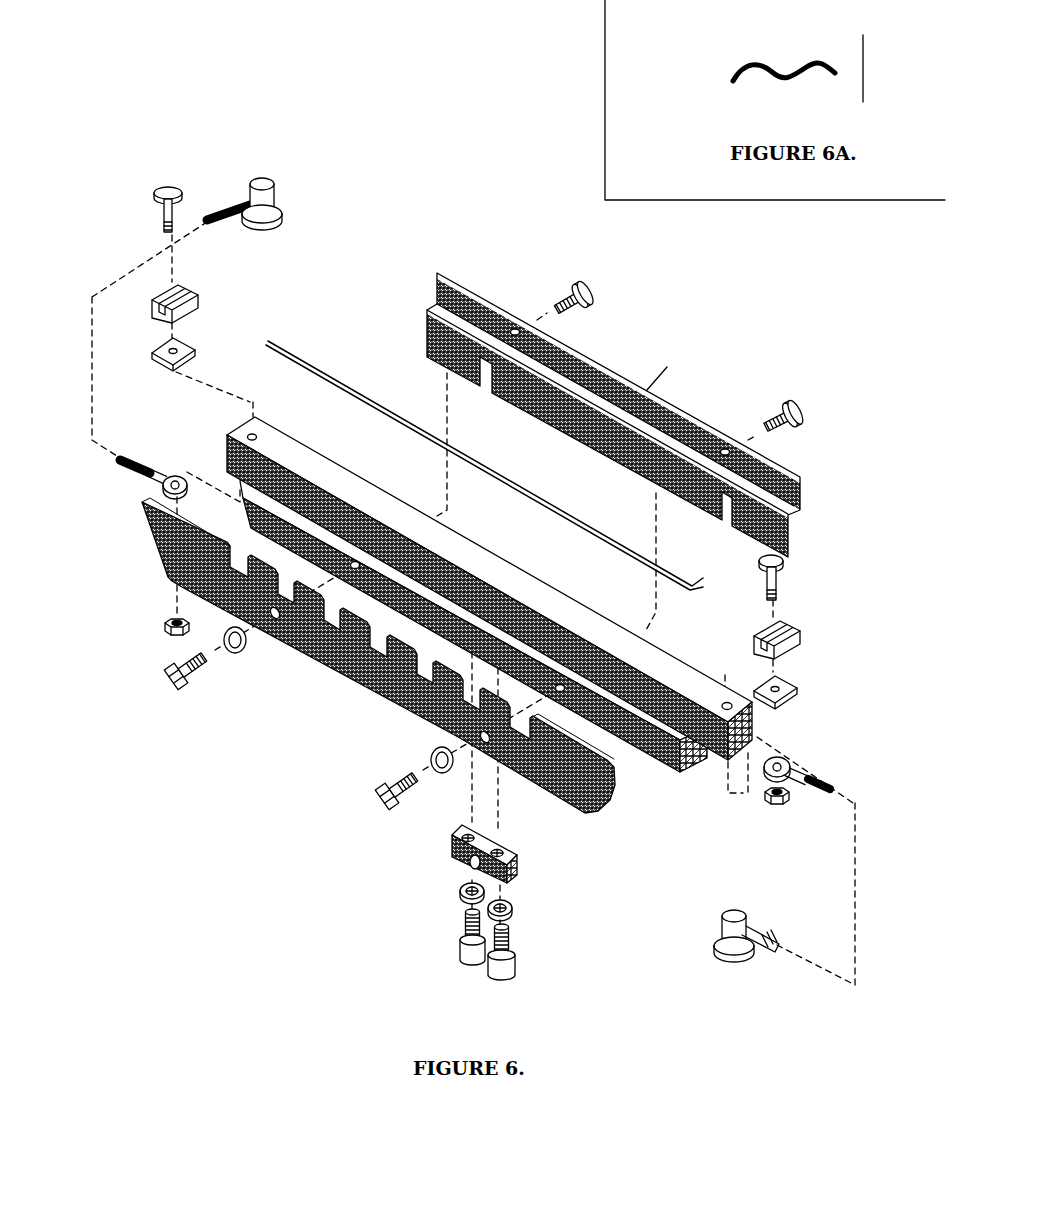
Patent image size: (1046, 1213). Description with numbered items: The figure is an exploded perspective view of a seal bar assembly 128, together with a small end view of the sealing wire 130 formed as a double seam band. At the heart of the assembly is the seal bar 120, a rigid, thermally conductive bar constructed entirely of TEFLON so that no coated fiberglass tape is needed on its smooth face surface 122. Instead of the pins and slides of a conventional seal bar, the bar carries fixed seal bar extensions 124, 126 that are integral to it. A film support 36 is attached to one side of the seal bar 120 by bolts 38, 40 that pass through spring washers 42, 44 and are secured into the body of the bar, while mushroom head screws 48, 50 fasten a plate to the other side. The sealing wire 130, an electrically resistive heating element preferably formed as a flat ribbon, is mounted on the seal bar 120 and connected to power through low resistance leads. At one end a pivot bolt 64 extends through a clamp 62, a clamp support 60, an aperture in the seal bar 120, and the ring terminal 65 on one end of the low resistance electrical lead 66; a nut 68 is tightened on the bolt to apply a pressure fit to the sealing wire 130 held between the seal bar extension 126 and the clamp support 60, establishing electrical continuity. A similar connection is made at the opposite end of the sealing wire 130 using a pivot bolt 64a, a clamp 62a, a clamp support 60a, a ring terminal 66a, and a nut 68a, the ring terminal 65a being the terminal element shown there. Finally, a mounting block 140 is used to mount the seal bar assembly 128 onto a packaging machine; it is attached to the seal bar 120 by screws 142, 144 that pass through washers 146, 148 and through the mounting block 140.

In FIG. 6A, the sealing wire 130 is at (758, 55).
In FIG. 6, the sealing wire 130 is at (698, 578).
In FIG. 6, the pivot bolt 64a is at (160, 185).
In FIG. 6, the nut 68a is at (255, 178).
In FIG. 6, the clamp 62a is at (195, 302).
In FIG. 6, the clamp support 60a is at (195, 353).
In FIG. 6, the mushroom head screw 48 is at (580, 280).
In FIG. 6, the mushroom head screw 50 is at (797, 402).
In FIG. 6, the seal bar extension 124 is at (235, 427).
In FIG. 6, the smooth face surface 122 is at (307, 458).
In FIG. 6, the seal bar extension 126 is at (737, 697).
In FIG. 6, the ring terminal 66a is at (120, 465).
In FIG. 6, the eye bolt 65a is at (184, 494).
In FIG. 6, the pivot bolt 64 is at (780, 580).
In FIG. 6, the clamp 62 is at (800, 637).
In FIG. 6, the clamp support 60 is at (797, 692).
In FIG. 6, the film support 36 is at (347, 677).
In FIG. 6, the bolt 38 is at (170, 683).
In FIG. 6, the spring washer 42 is at (247, 650).
In FIG. 6, the spring washer 44 is at (432, 750).
In FIG. 6, the bolt 40 is at (378, 785).
In FIG. 6, the seal bar 120 is at (688, 758).
In FIG. 6, the ring terminal 65 is at (808, 782).
In FIG. 6, the nut 68 is at (788, 797).
In FIG. 6, the low resistance electrical lead 66 is at (773, 935).
In FIG. 6, the seal bar assembly 128 is at (214, 786).
In FIG. 6, the mounting block 140 is at (520, 868).
In FIG. 6, the washer 148 is at (458, 898).
In FIG. 6, the washer 146 is at (515, 913).
In FIG. 6, the screw 144 is at (465, 962).
In FIG. 6, the screw 142 is at (515, 972).